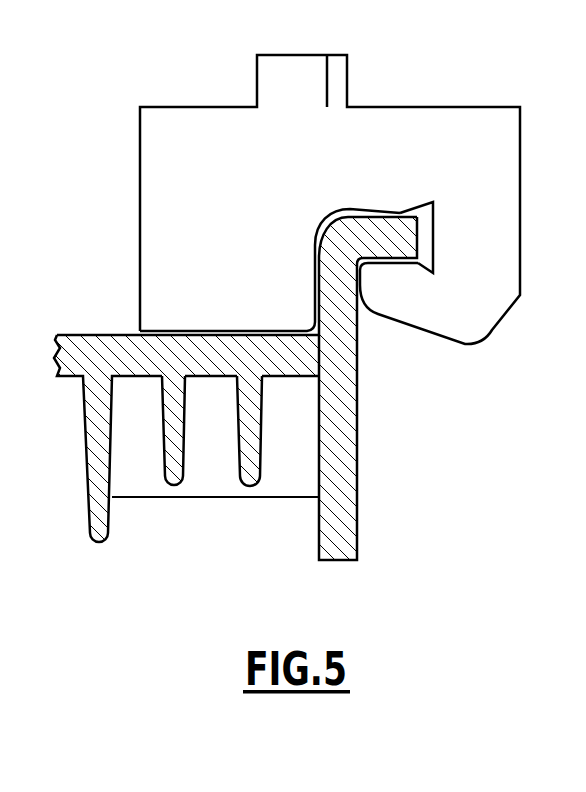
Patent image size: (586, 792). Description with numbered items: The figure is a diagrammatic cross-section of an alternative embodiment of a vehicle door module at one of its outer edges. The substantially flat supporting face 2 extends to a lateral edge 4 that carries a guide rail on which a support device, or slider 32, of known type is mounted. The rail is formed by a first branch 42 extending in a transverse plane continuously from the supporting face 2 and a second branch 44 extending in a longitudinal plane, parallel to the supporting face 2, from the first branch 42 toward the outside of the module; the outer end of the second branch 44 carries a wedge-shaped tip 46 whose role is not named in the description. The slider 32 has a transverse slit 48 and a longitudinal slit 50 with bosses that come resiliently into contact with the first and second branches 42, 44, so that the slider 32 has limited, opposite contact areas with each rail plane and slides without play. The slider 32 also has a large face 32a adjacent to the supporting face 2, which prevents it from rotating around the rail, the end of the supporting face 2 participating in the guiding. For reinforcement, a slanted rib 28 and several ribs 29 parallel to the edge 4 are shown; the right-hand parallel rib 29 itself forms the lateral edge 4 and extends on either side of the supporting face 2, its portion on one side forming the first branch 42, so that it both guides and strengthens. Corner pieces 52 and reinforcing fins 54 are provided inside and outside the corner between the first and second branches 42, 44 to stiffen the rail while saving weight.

The supporting face 2 is at (87, 335).
The lateral edge 4 is at (360, 420).
The slanted rib 28 is at (135, 485).
The ribs 29 is at (330, 477).
The slider 32 is at (185, 113).
The large face 32a is at (160, 330).
The first branch 42 is at (322, 265).
The second branch 44 is at (403, 227).
The recess 46 is at (423, 238).
The transverse slit 48 is at (315, 236).
The longitudinal slit 50 is at (365, 217).
The corner pieces 52 is at (364, 264).
The reinforcing fins 54 is at (322, 215).